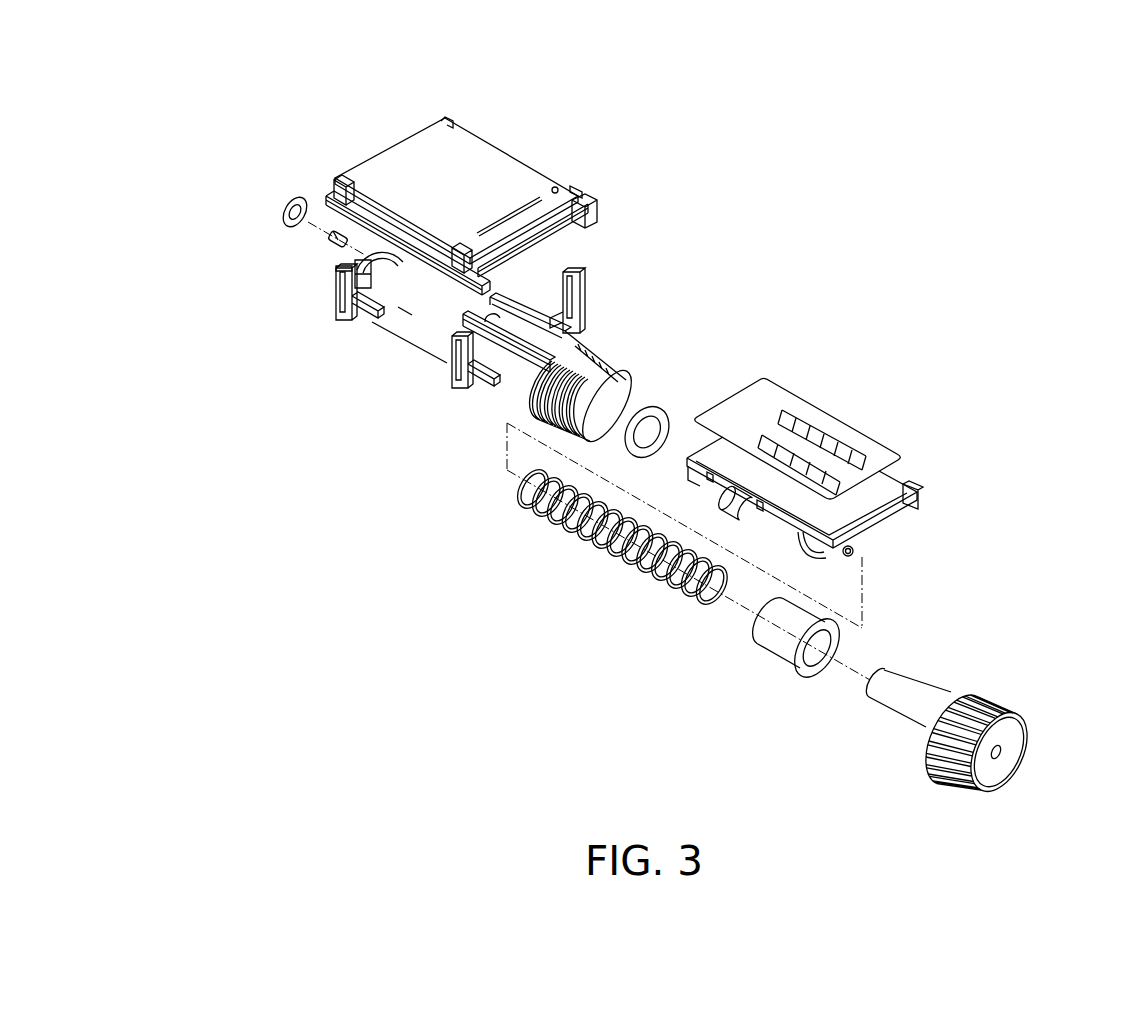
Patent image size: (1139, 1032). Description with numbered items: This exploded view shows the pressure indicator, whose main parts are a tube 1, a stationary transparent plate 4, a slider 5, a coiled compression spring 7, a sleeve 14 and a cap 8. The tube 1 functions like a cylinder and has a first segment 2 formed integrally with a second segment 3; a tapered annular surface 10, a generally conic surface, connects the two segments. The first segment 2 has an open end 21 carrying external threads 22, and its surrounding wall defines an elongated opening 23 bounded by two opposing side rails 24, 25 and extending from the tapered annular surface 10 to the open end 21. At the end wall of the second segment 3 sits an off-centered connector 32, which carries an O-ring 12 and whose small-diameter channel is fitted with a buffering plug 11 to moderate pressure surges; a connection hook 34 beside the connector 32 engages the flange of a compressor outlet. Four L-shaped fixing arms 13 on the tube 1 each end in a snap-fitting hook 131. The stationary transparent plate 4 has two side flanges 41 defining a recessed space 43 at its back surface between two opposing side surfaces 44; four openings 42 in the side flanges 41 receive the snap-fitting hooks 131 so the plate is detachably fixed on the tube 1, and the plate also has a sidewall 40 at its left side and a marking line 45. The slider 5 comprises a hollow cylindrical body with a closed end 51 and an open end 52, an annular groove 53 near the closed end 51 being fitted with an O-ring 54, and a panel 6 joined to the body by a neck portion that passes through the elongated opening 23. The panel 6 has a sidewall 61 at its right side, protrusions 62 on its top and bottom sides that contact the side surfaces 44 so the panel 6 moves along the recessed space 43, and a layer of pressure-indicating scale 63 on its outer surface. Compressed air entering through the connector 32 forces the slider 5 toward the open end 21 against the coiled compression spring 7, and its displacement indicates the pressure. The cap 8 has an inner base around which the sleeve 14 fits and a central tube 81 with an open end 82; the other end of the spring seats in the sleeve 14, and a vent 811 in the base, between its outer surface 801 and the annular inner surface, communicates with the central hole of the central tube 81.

The tube 1 is at (412, 347).
The first segment 2 is at (520, 362).
The second segment 3 is at (407, 315).
The stationary transparent plate 4 is at (533, 183).
The slider 5 is at (865, 612).
The panel 6 is at (875, 500).
The coiled compression spring 7 is at (600, 553).
The cap 8 is at (937, 769).
The tapered annular surface 10 is at (475, 312).
The buffering plug 11 is at (328, 237).
The O-ring 12 is at (280, 207).
The L-shaped fixing arm 13 is at (335, 315).
The sleeve 14 is at (780, 652).
The open end 21 is at (622, 396).
The external threads 22 is at (548, 428).
The elongated opening 23 is at (588, 349).
The side rail 24 is at (490, 365).
The side rail 25 is at (533, 303).
The connector 32 is at (387, 260).
The connection hook 34 is at (335, 268).
The sidewall 40 is at (340, 170).
The side flange 41 is at (590, 217).
The opening 42 is at (460, 247).
The recessed space 43 is at (553, 236).
The side surface 44 is at (577, 191).
The marking line 45 is at (510, 222).
The closed end 51 is at (700, 445).
The open end 52 is at (822, 548).
The annular groove 53 is at (730, 505).
The O-ring 54 is at (688, 457).
The sidewall 61 is at (890, 523).
The protrusion 62 is at (757, 504).
The pressure-indicating scale 63 is at (855, 435).
The central tube 81 is at (898, 700).
The open end 82 is at (855, 688).
The snap-fitting hook 131 is at (333, 275).
The outer surface 801 is at (1010, 735).
The vent 811 is at (1003, 753).